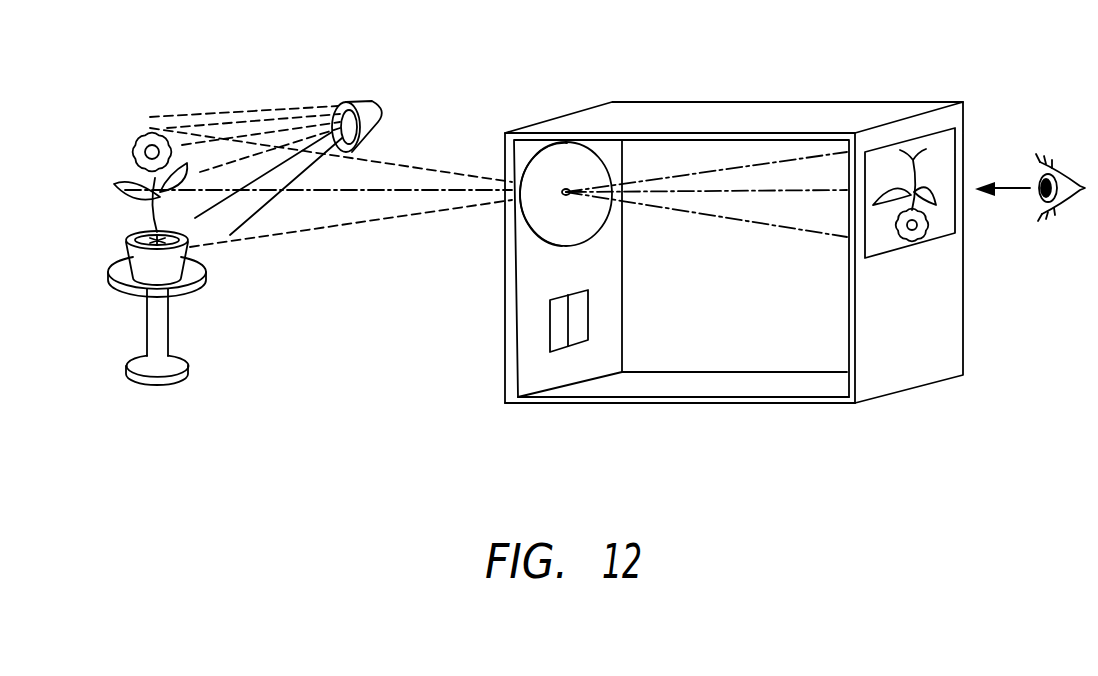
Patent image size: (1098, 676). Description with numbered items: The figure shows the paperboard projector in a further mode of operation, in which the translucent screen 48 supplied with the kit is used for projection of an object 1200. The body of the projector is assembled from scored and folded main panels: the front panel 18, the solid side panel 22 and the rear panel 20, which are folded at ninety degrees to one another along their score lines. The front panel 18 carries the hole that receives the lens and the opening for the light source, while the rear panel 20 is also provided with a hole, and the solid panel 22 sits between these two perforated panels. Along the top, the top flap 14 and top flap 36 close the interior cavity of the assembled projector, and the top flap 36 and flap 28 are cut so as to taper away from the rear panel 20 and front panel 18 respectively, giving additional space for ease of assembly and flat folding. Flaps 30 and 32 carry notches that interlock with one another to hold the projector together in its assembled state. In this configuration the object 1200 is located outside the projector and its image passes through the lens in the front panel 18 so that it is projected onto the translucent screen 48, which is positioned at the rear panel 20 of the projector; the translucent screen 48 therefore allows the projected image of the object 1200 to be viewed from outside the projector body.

The object 1200 is at (136, 108).
The top flap 14 is at (712, 118).
The front panel 18 is at (553, 290).
The side panel 22 is at (733, 297).
The rear panel 20 is at (925, 316).
The translucent screen 48 is at (938, 152).
The flap 30 is at (702, 385).
The flap 32 is at (683, 433).
The flap 28 is at (704, 421).
The top flap 36 is at (775, 421).